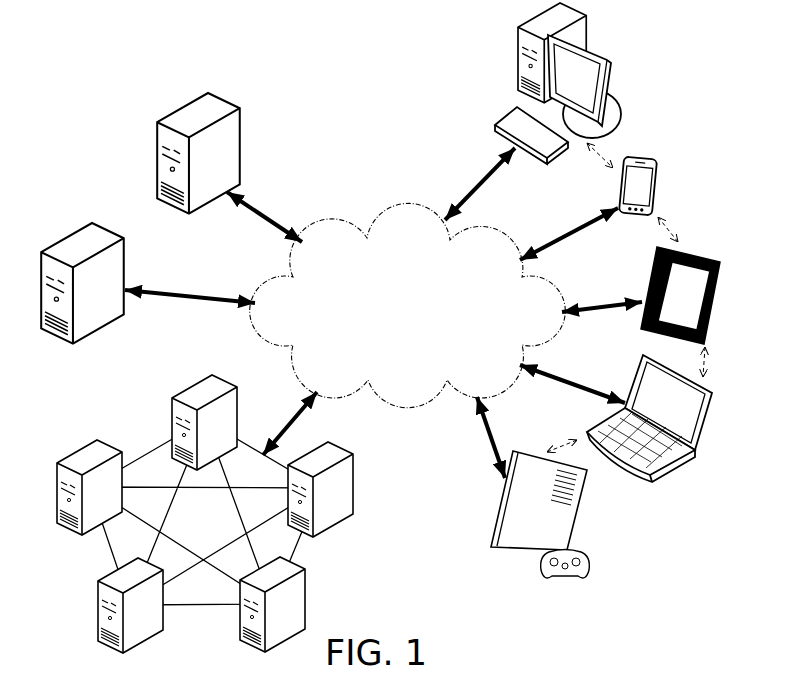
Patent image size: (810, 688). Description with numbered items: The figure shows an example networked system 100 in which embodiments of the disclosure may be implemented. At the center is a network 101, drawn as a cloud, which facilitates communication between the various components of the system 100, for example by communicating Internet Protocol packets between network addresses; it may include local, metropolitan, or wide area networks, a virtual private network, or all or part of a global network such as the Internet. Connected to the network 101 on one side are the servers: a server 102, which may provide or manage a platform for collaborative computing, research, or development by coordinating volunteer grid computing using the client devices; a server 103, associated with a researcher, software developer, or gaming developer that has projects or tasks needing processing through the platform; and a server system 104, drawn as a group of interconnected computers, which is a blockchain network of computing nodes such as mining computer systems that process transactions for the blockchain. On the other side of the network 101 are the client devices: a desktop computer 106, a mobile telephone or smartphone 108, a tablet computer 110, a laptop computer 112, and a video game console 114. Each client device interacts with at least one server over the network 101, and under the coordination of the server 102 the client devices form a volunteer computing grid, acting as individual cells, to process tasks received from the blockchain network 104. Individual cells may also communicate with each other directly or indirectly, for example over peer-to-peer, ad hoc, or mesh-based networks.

The networked system 100 is at (286, 76).
The network 101 is at (370, 232).
The server 102 is at (170, 111).
The server 103 is at (70, 230).
The server system 104 is at (150, 453).
The desktop computer 106 is at (515, 52).
The mobile telephone or smartphone 108 is at (658, 170).
The tablet computer 110 is at (713, 300).
The laptop computer 112 is at (695, 452).
The video game console 114 is at (587, 480).